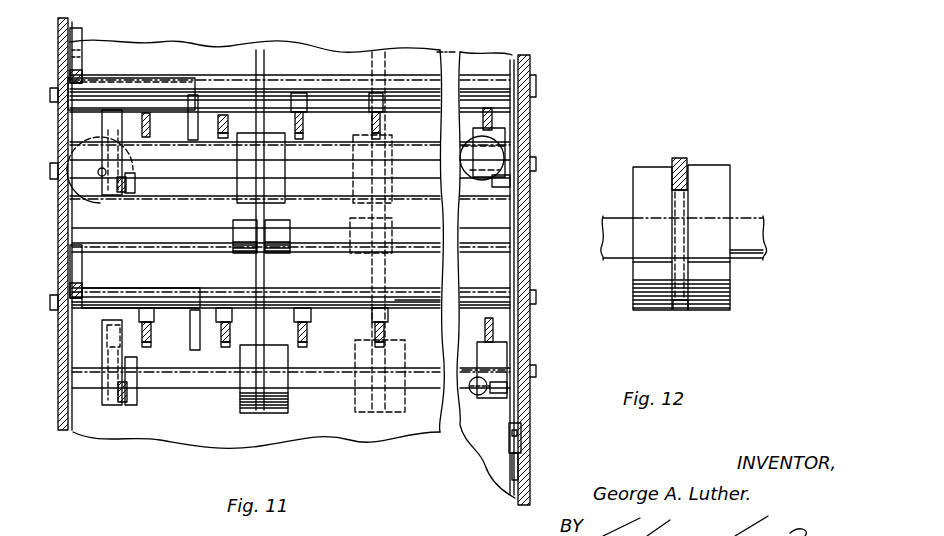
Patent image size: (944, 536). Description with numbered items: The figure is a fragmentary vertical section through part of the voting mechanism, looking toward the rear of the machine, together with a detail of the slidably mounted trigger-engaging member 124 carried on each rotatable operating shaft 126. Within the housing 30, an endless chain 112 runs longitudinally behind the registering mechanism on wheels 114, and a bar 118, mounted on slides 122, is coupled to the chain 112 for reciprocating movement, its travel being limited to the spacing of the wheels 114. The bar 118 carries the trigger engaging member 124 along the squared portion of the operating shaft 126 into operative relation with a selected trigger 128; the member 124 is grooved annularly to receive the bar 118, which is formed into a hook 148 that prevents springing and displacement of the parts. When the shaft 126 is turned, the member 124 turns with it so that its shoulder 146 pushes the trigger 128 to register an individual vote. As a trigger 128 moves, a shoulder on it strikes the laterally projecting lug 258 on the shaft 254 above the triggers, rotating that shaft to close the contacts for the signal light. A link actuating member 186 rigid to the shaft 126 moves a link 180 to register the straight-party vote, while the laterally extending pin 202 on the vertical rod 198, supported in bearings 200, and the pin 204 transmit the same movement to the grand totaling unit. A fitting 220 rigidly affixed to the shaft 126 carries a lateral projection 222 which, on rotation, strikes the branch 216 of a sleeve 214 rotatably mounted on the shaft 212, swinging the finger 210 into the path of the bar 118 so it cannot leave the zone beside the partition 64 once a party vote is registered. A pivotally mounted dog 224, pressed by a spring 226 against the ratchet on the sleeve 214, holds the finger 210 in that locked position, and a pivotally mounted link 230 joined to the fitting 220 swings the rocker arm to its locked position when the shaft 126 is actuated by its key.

In FIG. 11, the housing 30 is at (532, 468).
In FIG. 11, the partition 64 is at (65, 429).
In FIG. 11, the endless chain 112 is at (212, 201).
In FIG. 11, the wheels 114 is at (81, 195).
In FIG. 11, the bar 118 is at (370, 270).
In FIG. 12, the bar 118 is at (680, 155).
In FIG. 11, the slides 122 is at (168, 239).
In FIG. 11, the trigger engaging member 124 is at (357, 202).
In FIG. 12, the trigger engaging member 124 is at (718, 204).
In FIG. 11, the operating shaft 126 is at (205, 170).
In FIG. 12, the operating shaft 126 is at (748, 243).
In FIG. 11, the trigger 128 is at (217, 125).
In FIG. 12, the shoulder 146 is at (657, 254).
In FIG. 12, the hook 148 is at (680, 313).
In FIG. 11, the link 180 is at (493, 121).
In FIG. 11, the link actuating member 186 is at (493, 358).
In FIG. 11, the vertical rod 198 is at (516, 405).
In FIG. 11, the bearing 200 is at (524, 443).
In FIG. 11, the laterally extending pin 202 is at (498, 190).
In FIG. 11, the pin 204 is at (472, 190).
In FIG. 11, the finger 210 is at (189, 135).
In FIG. 11, the shaft 212 is at (215, 84).
In FIG. 11, the sleeve 214 is at (143, 80).
In FIG. 11, the branch 216 is at (108, 108).
In FIG. 11, the fitting 220 is at (120, 156).
In FIG. 11, the lateral projection 222 is at (107, 342).
In FIG. 11, the dog 224 is at (80, 57).
In FIG. 11, the spring 226 is at (74, 38).
In FIG. 11, the link 230 is at (128, 188).
In FIG. 11, the shaft 254 is at (405, 302).
In FIG. 11, the lug 258 is at (222, 320).